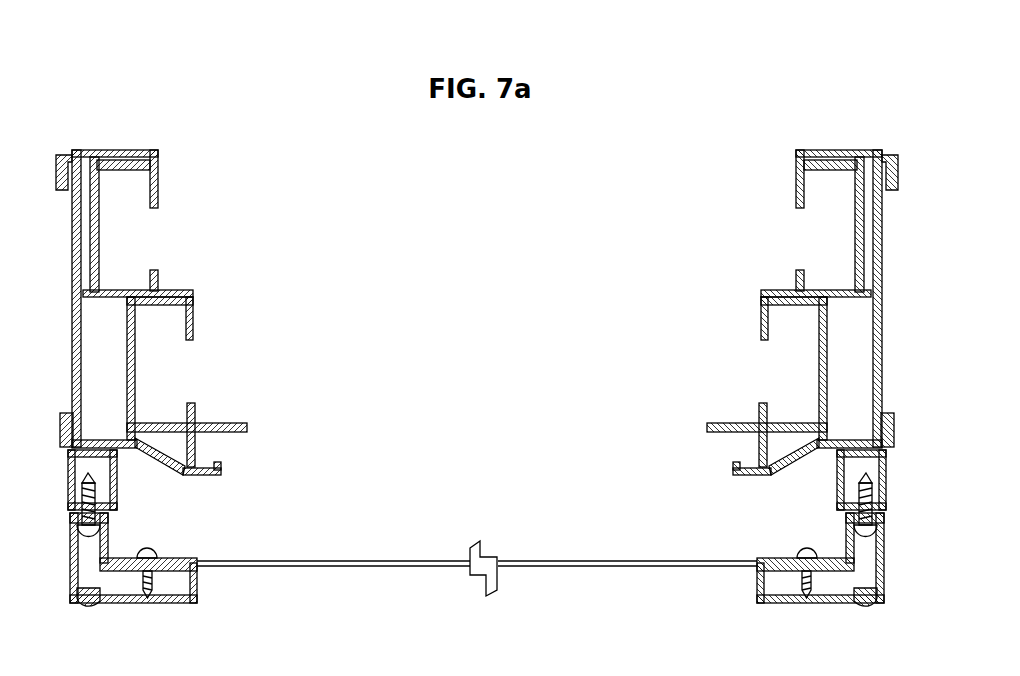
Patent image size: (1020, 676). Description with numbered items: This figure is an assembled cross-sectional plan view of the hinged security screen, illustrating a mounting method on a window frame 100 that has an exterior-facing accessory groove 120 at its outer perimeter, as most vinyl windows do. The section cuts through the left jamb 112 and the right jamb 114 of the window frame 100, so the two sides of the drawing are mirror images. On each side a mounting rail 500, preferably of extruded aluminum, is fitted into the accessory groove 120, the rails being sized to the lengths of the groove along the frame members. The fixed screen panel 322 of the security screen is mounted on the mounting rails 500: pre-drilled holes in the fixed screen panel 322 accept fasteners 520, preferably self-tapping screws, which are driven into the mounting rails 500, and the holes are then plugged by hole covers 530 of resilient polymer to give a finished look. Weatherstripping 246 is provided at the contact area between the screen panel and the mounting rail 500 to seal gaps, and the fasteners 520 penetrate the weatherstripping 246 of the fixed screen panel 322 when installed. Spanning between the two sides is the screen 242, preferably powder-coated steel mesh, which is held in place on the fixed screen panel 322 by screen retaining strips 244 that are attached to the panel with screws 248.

The window frame 100 is at (197, 188).
The left jamb 112 is at (174, 290).
The right jamb 114 is at (856, 268).
The accessory groove 120 is at (70, 417).
The screen 242 is at (405, 564).
The screen retaining strip 244 is at (178, 558).
The weatherstripping 246 is at (98, 516).
The screw 248 is at (157, 545).
The fixed screen panel 322 is at (173, 603).
The mounting rail 500 is at (70, 487).
The fastener 520 is at (87, 487).
The hole cover 530 is at (99, 607).